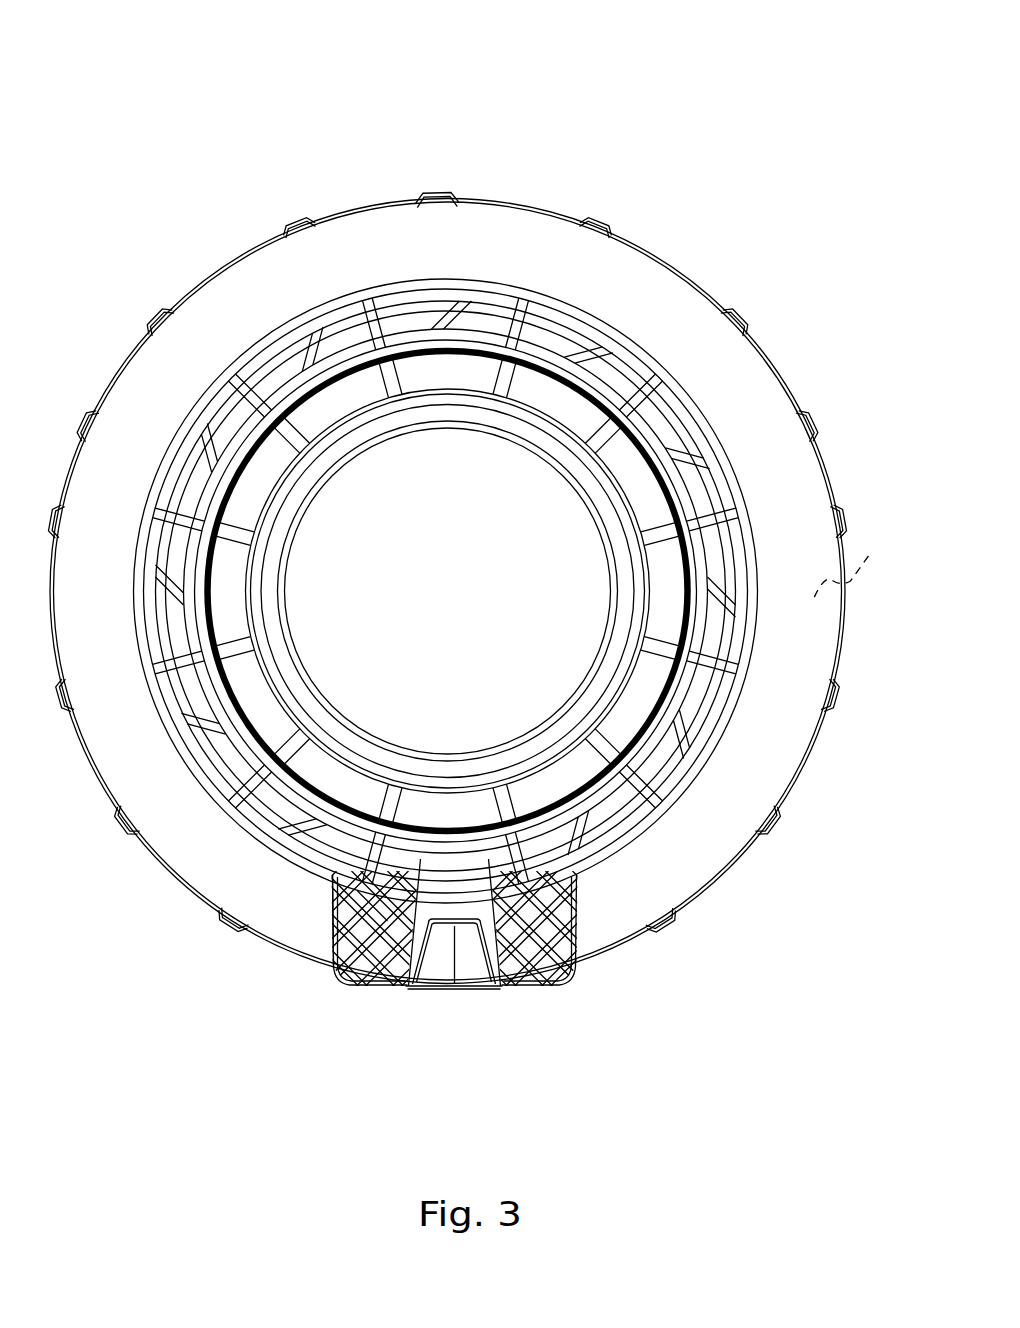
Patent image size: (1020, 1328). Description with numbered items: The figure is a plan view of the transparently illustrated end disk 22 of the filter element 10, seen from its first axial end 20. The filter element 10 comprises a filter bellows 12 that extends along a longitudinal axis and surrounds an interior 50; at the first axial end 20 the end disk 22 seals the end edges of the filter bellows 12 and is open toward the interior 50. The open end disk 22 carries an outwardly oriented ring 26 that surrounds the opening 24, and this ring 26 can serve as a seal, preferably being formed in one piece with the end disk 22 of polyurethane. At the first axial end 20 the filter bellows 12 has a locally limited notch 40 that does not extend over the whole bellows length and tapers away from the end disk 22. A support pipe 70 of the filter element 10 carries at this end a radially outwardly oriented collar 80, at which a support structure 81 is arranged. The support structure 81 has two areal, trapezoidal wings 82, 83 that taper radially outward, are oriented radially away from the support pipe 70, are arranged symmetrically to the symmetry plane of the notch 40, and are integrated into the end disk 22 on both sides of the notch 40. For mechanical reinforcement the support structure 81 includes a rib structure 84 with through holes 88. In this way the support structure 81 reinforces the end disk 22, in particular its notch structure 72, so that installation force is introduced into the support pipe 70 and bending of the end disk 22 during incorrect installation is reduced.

The filter element 10 is at (475, 575).
The filter bellows 12 is at (859, 555).
The first axial end 20 is at (447, 563).
The end disk 22 is at (447, 587).
The opening 24 is at (445, 537).
The ring 26 is at (430, 577).
The notch 40 is at (454, 996).
The interior 50 is at (447, 591).
The support pipe 70 is at (448, 470).
The notch structure 72 is at (432, 1022).
The collar 80 is at (545, 590).
The support structure 81 is at (455, 958).
The wing 82 is at (380, 952).
The wing 83 is at (529, 958).
The rib structure 84 is at (291, 927).
The through holes 88 is at (305, 892).